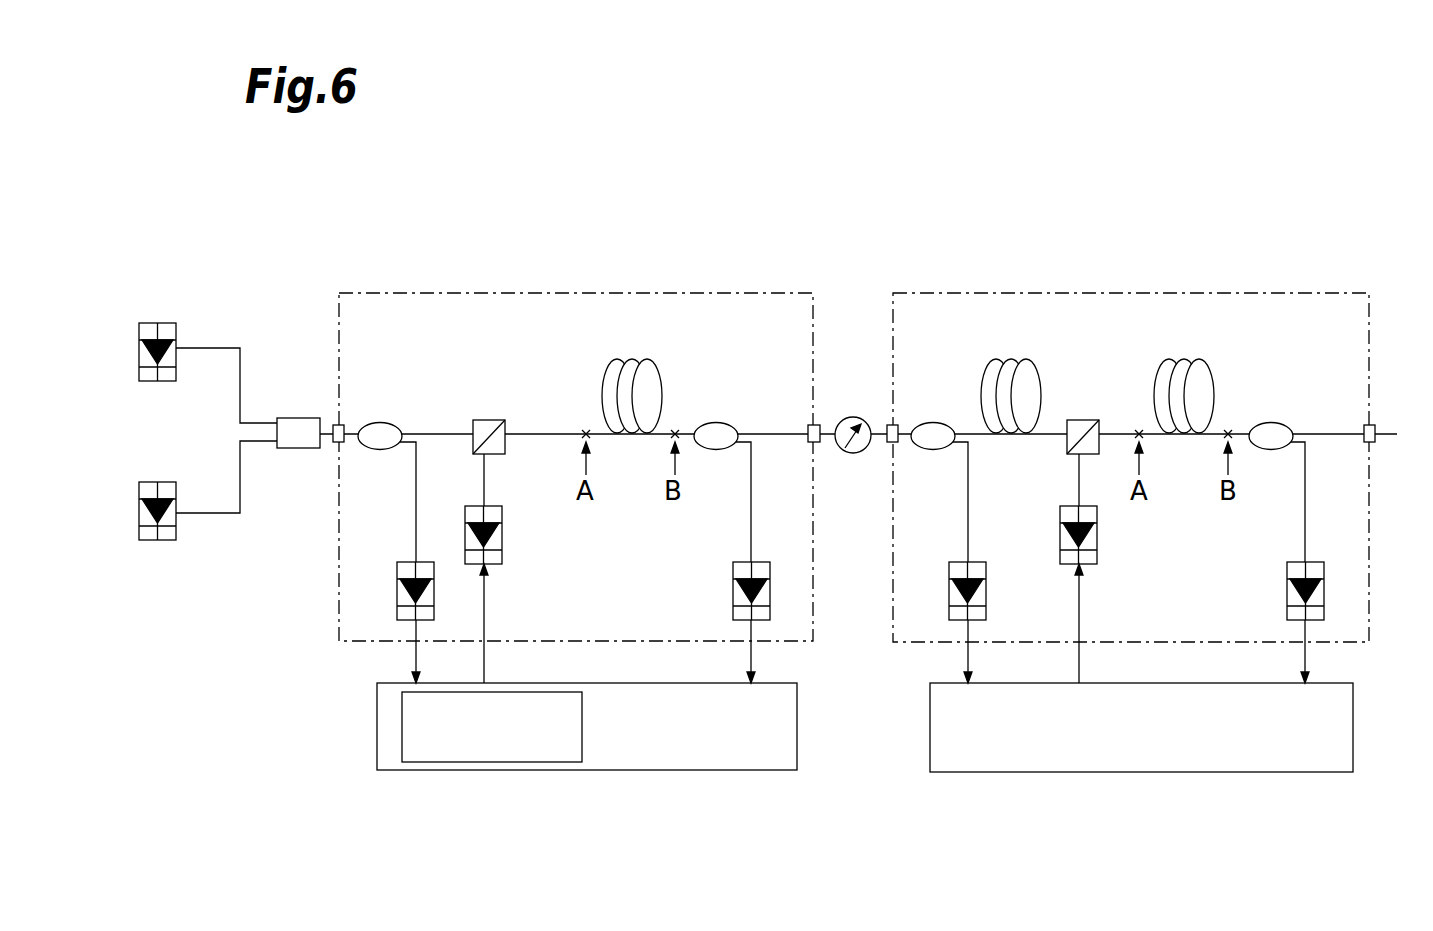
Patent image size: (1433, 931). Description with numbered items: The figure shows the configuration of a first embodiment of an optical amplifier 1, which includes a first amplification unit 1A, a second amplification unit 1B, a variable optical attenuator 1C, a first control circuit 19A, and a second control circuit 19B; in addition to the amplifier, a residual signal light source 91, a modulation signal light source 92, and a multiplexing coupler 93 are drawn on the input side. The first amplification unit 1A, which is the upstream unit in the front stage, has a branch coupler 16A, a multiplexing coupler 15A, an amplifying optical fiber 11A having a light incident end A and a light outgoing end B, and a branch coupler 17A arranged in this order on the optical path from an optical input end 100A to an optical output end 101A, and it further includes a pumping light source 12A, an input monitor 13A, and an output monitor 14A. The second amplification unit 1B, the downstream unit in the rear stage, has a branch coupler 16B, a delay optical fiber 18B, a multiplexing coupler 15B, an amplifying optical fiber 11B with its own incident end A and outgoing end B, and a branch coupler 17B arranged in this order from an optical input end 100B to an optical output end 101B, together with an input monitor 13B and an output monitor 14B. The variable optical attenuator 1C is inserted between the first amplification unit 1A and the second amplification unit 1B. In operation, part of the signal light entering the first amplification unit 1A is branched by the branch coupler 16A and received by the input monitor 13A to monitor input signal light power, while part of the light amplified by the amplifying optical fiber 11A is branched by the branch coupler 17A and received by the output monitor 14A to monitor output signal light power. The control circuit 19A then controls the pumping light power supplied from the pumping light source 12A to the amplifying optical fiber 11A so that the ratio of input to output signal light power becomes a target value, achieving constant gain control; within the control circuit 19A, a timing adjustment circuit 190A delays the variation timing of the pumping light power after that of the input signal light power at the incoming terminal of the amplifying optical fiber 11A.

The optical amplifier 1 is at (1020, 190).
The first amplification unit 1A is at (713, 293).
The second amplification unit 1B is at (1312, 293).
The variable optical attenuator 1C is at (857, 418).
The residual signal light source 91 is at (139, 333).
The modulation signal light source 92 is at (139, 491).
The multiplexing coupler 93 is at (303, 449).
The optical input end 100A is at (336, 425).
The optical input end 100B is at (893, 425).
The optical output end 101A is at (817, 443).
The optical output end 101B is at (1372, 443).
The amplifying optical fiber 11A is at (645, 360).
The amplifying optical fiber 11B is at (1200, 360).
The delay optical fiber 18B is at (1026, 360).
The pumping light source 12A is at (497, 507).
The input monitor 13A is at (405, 562).
The input monitor 13B is at (958, 562).
The output monitor 14A is at (740, 562).
The output monitor 14B is at (1295, 562).
The multiplexing coupler 15A is at (490, 420).
The multiplexing coupler 15B is at (1082, 420).
The branch coupler 16A is at (380, 423).
The branch coupler 16B is at (933, 423).
The branch coupler 17A is at (716, 423).
The branch coupler 17B is at (1271, 423).
The first control circuit 19A is at (543, 748).
The second control circuit 19B is at (930, 700).
The timing adjustment circuit 190A is at (402, 745).